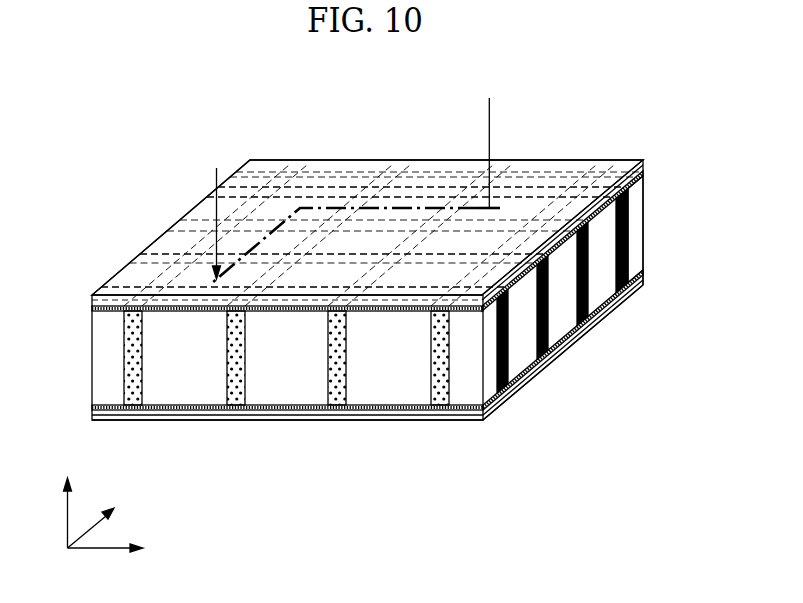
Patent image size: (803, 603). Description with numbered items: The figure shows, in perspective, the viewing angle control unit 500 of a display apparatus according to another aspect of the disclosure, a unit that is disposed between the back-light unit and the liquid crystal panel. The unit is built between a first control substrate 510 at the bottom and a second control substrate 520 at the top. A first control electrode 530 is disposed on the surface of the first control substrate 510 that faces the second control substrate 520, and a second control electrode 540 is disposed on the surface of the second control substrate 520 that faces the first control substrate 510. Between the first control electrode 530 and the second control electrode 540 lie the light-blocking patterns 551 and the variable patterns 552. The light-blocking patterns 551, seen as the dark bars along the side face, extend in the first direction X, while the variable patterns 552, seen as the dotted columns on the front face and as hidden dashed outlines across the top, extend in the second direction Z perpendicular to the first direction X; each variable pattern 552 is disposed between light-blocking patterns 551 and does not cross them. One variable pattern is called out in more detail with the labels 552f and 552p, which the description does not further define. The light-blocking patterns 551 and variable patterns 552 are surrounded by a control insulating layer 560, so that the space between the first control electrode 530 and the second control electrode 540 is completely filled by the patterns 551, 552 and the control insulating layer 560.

The viewing angle control unit 500 is at (198, 75).
The first control substrate 510 is at (633, 285).
The second control substrate 520 is at (643, 164).
The first control electrode 530 is at (92, 405).
The second control electrode 540 is at (92, 308).
The light-blocking pattern 551 is at (630, 238).
The variable pattern 552 is at (114, 357).
The spacer frame 552f is at (328, 403).
The spacer particles 552p is at (352, 398).
The control insulating layer 560 is at (633, 207).